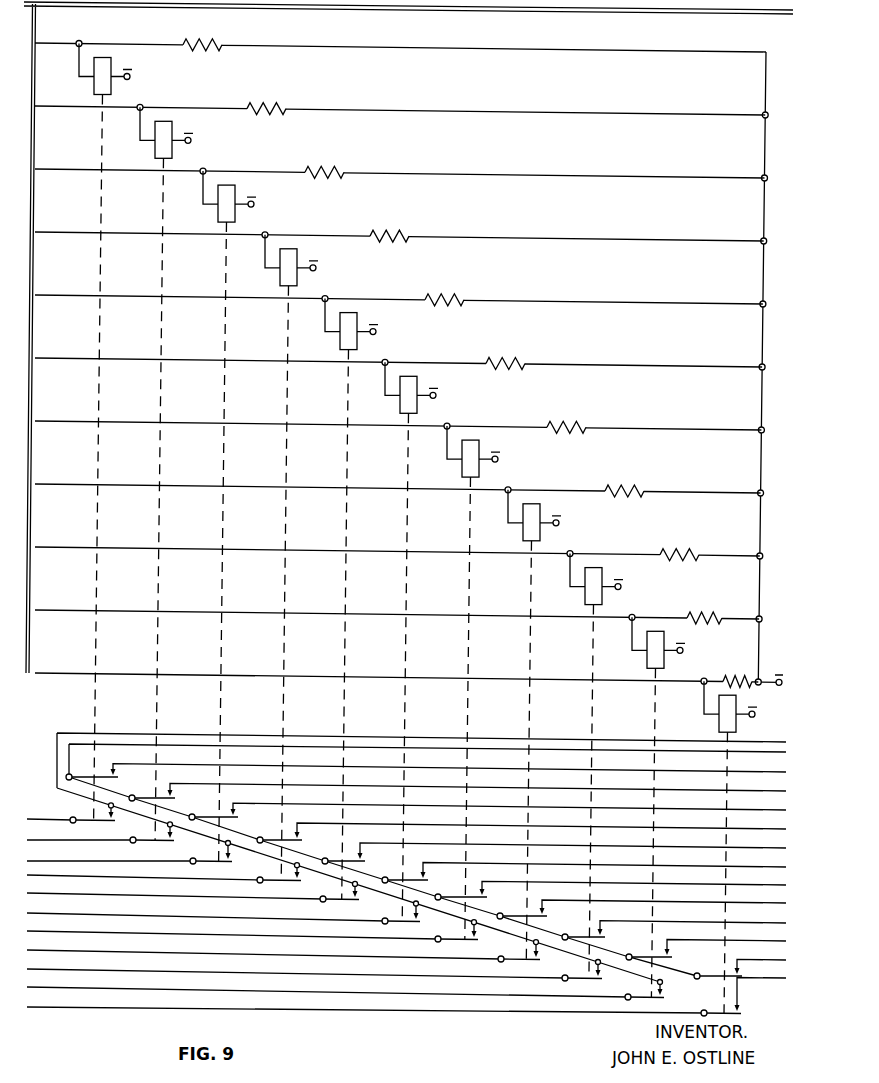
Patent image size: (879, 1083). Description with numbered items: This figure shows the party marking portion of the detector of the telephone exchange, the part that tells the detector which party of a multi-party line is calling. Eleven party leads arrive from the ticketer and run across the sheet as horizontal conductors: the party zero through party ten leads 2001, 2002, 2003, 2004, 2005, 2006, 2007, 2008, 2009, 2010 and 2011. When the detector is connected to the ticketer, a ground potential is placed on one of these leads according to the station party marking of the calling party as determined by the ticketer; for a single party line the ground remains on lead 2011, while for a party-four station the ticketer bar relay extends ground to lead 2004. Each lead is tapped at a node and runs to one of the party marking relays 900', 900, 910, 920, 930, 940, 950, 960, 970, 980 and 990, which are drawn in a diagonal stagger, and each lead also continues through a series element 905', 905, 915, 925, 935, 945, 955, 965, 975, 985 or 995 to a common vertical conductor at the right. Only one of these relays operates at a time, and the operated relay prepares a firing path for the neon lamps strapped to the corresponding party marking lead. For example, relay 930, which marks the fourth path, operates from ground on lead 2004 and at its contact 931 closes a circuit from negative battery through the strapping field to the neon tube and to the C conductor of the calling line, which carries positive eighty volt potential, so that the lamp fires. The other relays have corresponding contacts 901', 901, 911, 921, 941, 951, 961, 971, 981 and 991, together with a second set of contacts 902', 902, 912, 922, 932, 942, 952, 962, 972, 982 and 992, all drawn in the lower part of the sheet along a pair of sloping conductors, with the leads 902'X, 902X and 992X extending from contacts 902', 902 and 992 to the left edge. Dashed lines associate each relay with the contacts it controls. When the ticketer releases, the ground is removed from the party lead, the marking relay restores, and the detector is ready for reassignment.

The party ten lead 2011 is at (43, 32).
The party zero lead 2001 is at (43, 95).
The party marking lead 2002 is at (43, 158).
The party marking lead 2003 is at (43, 221).
The party four lead 2004 is at (43, 284).
The party marking lead 2005 is at (43, 347).
The party marking lead 2006 is at (43, 410).
The party marking lead 2007 is at (43, 473).
The party marking lead 2008 is at (43, 536).
The party marking lead 2009 is at (43, 599).
The party marking lead 2010 is at (43, 662).
The party marking relay 900' is at (117, 433).
The party marking relay 900 is at (176, 474).
The party marking relay 910 is at (235, 218).
The party marking relay 920 is at (297, 282).
The party marking relay 930 is at (357, 346).
The party marking relay 940 is at (417, 409).
The party marking relay 950 is at (479, 473).
The party marking relay 960 is at (540, 537).
The party marking relay 970 is at (602, 601).
The party marking relay 980 is at (664, 664).
The party marking relay 990 is at (736, 728).
The resistor 905' is at (222, 36).
The resistor 905 is at (277, 99).
The resistor 915 is at (332, 155).
The resistor 925 is at (397, 219).
The resistor 935 is at (452, 283).
The resistor 945 is at (513, 346).
The resistor 955 is at (574, 410).
The resistor 965 is at (632, 474).
The resistor 975 is at (687, 538).
The resistor 985 is at (712, 601).
The resistor 995 is at (747, 668).
The relay contact 901' is at (426, 775).
The relay contact 901 is at (457, 795).
The relay contact 911 is at (487, 815).
The relay contact 921 is at (521, 836).
The contact 931 is at (554, 857).
The relay contact 941 is at (584, 877).
The relay contact 951 is at (610, 894).
The relay contact 961 is at (641, 913).
The relay contact 971 is at (674, 934).
The relay contact 981 is at (706, 954).
The relay contact 991 is at (740, 972).
The relay contact 902' is at (113, 820).
The relay contact 902 is at (170, 839).
The relay contact 912 is at (230, 868).
The relay contact 922 is at (299, 887).
The relay contact 932 is at (357, 906).
The relay contact 942 is at (418, 928).
The relay contact 952 is at (476, 946).
The relay contact 962 is at (538, 966).
The relay contact 972 is at (600, 985).
The relay contact 982 is at (662, 1004).
The relay contact 992 is at (743, 999).
The contact lead 902'X is at (51, 811).
The contact lead 902X is at (79, 838).
The contact lead 992X is at (88, 1005).